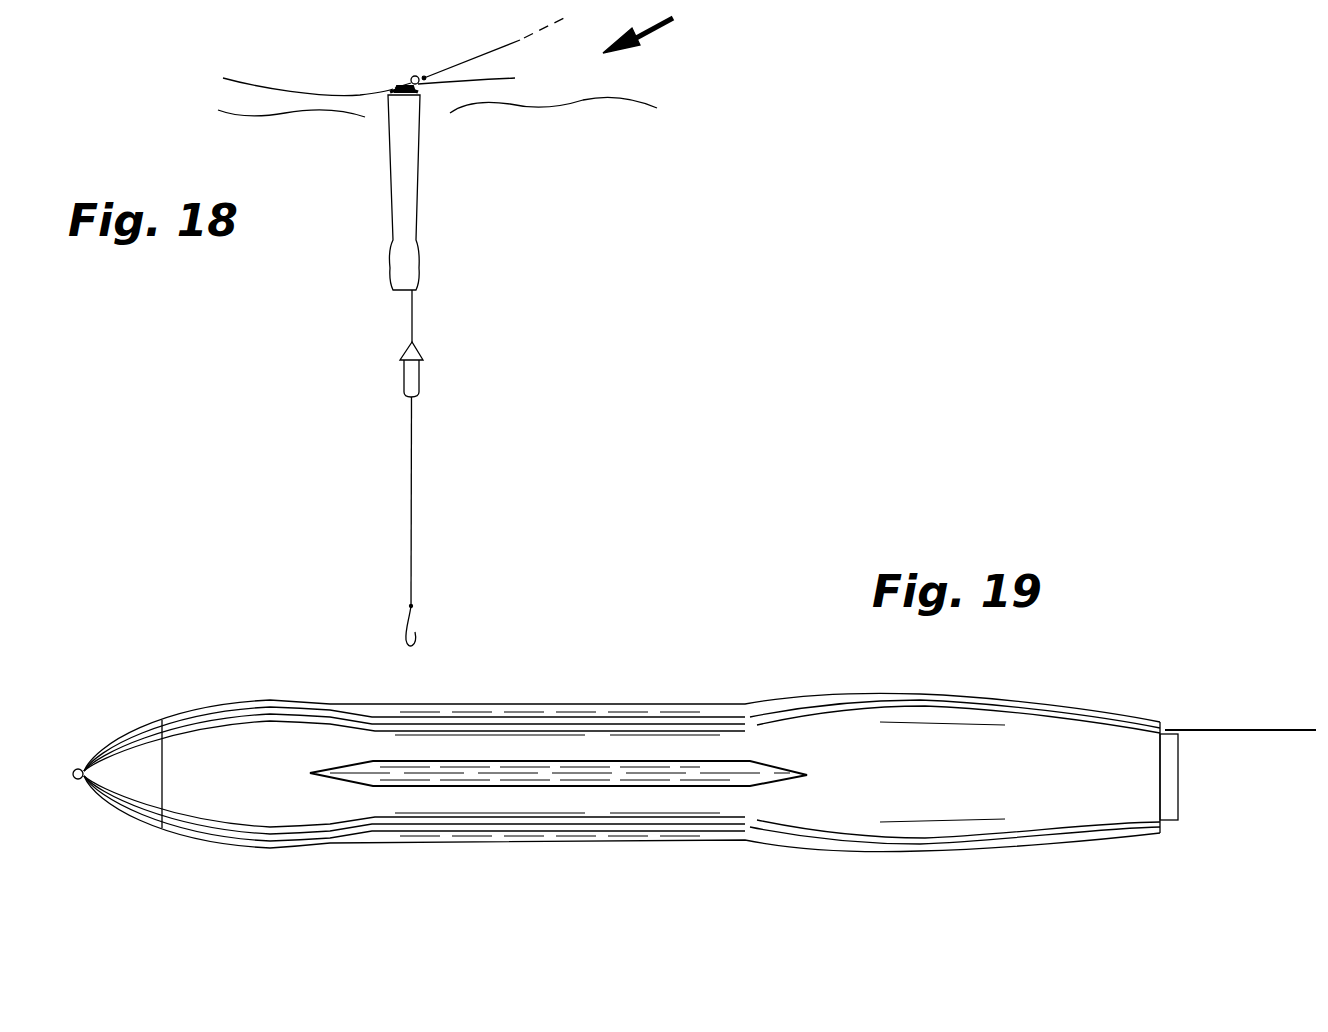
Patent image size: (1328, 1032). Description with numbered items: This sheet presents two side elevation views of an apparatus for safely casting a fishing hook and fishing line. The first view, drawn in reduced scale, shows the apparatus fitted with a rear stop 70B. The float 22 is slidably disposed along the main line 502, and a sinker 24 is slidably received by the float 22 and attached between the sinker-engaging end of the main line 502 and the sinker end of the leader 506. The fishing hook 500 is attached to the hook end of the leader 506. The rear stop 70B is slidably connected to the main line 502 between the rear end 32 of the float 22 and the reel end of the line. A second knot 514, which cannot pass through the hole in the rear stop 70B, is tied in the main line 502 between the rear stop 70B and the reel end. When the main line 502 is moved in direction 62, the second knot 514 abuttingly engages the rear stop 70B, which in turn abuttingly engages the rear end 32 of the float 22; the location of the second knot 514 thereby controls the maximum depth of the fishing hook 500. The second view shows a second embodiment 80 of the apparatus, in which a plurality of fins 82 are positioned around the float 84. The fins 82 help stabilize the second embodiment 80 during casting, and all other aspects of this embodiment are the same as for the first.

In FIG. 18, the float 22 is at (417, 233).
In FIG. 18, the sinker 24 is at (420, 384).
In FIG. 18, the rear end 32 is at (421, 98).
In FIG. 18, the direction 62 is at (657, 30).
In FIG. 18, the rear stop 70B is at (407, 84).
In FIG. 18, the fishing hook 500 is at (405, 641).
In FIG. 18, the main line 502 is at (488, 51).
In FIG. 18, the leader 506 is at (412, 496).
In FIG. 18, the second knot 514 is at (414, 76).
In FIG. 19, the second embodiment 80 is at (745, 673).
In FIG. 19, the fins 82 is at (507, 703).
In FIG. 19, the float 84 is at (1050, 705).